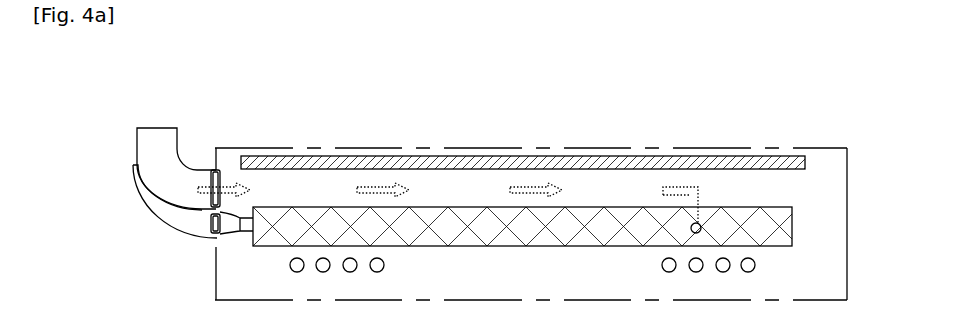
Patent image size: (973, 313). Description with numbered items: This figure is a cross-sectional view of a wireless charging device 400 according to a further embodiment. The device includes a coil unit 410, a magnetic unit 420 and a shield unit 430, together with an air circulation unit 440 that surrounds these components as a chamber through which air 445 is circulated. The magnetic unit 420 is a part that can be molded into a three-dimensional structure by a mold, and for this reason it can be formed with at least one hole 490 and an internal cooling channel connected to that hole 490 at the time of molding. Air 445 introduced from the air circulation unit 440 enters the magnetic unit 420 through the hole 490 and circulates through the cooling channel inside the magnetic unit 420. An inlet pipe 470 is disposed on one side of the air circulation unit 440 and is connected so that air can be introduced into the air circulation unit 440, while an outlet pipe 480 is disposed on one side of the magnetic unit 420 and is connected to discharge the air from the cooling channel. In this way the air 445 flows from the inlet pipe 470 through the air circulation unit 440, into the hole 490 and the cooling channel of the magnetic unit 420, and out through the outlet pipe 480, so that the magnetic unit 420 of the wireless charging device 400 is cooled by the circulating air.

The wireless charging device 400 is at (564, 106).
The coil unit 410 is at (756, 265).
The magnetic unit 420 is at (778, 237).
The shield unit 430 is at (762, 162).
The air circulation unit 440 is at (826, 184).
The air (fluid) 445 is at (677, 187).
The inlet pipe 470 is at (142, 152).
The outlet pipe 480 is at (145, 190).
The hole 490 is at (701, 228).